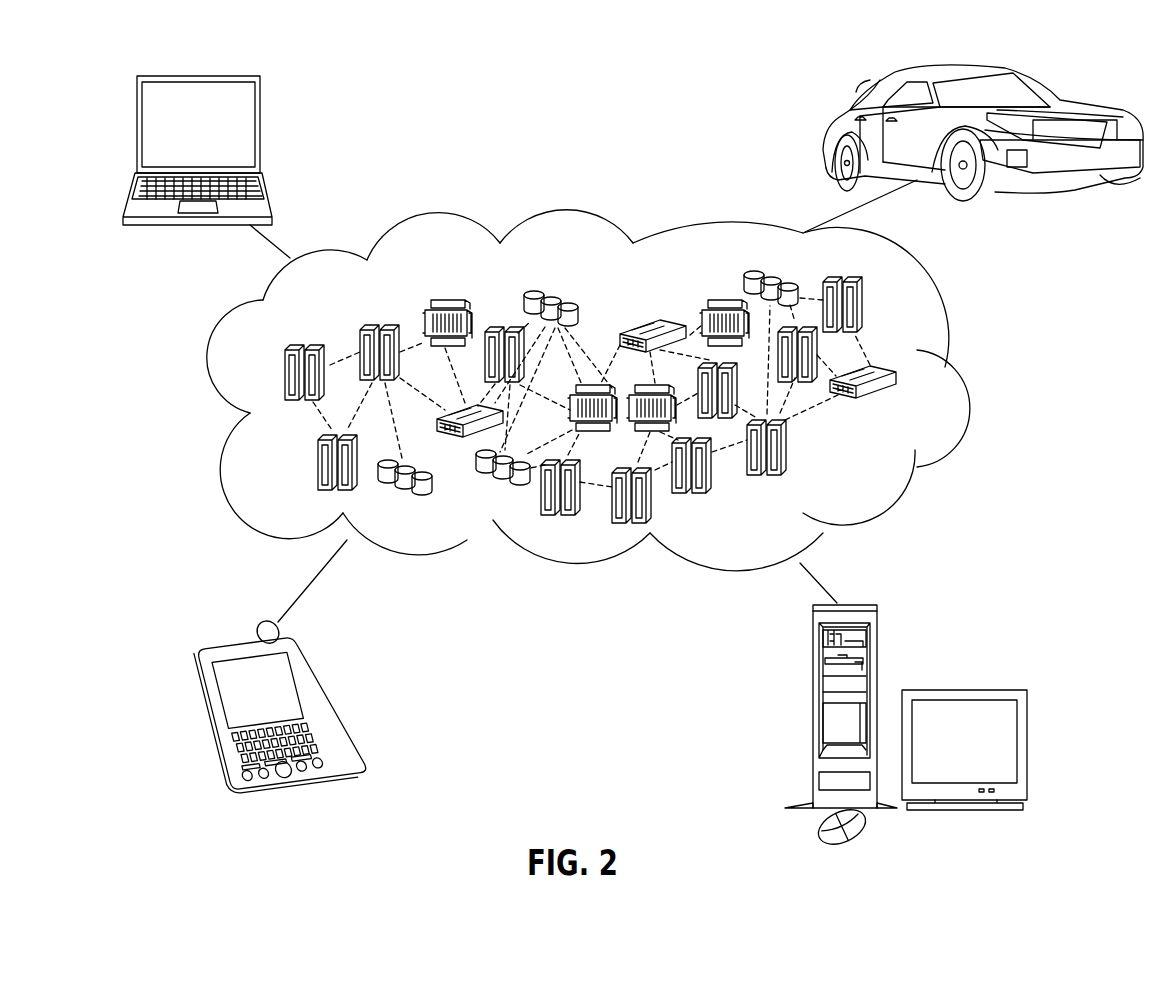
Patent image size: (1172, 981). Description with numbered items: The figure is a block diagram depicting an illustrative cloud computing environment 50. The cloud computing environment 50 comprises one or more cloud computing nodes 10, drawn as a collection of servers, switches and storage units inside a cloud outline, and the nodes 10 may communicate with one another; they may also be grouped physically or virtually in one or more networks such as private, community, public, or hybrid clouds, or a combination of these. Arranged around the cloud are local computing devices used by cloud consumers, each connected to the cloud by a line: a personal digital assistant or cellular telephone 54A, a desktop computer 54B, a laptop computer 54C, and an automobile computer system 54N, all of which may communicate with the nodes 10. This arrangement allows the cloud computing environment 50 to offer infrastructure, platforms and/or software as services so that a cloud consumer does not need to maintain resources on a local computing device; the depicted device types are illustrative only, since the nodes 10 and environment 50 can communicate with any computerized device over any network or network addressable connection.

The cloud computing nodes 10 is at (880, 473).
The cloud computing environment 50 is at (960, 382).
The personal digital assistant or cellular telephone 54A is at (308, 673).
The desktop computer 54B is at (812, 658).
The laptop computer 54C is at (260, 110).
The automobile computer system 54N is at (828, 122).